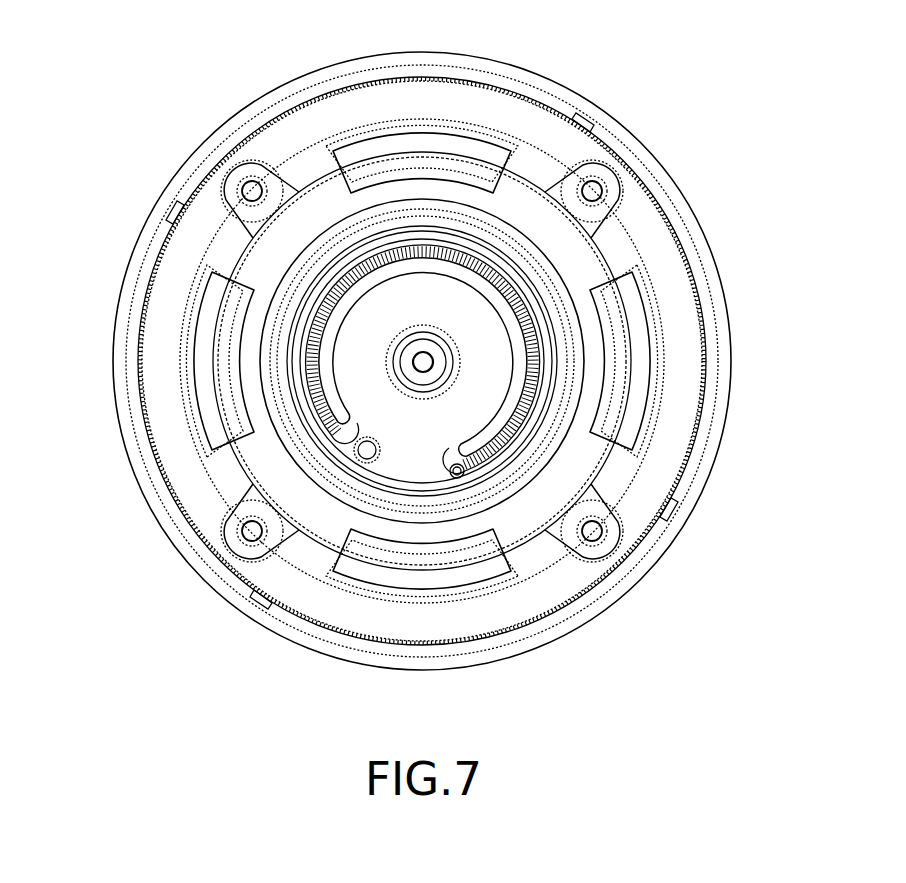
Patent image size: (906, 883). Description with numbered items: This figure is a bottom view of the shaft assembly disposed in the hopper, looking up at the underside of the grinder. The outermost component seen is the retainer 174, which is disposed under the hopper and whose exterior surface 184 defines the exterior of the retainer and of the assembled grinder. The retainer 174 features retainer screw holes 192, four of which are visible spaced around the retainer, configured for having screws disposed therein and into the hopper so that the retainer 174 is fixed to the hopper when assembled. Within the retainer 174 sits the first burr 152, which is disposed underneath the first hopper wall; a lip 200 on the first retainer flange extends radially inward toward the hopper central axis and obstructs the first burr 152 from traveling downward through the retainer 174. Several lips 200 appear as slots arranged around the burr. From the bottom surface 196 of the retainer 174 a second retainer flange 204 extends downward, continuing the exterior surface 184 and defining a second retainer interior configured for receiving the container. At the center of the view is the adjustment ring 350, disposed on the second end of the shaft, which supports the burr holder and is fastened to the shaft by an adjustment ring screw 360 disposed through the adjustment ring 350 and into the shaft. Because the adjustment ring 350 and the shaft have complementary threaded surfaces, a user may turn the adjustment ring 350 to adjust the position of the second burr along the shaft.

The first burr 152 is at (498, 195).
The retainer 174 is at (302, 648).
The exterior surface 184 is at (402, 665).
The retainer screw holes 192 is at (253, 193).
The bottom surface 196 is at (157, 377).
The lip 200 is at (385, 150).
The second retainer flange 204 is at (665, 190).
The adjustment ring 350 is at (420, 278).
The adjustment ring screw 360 is at (424, 360).